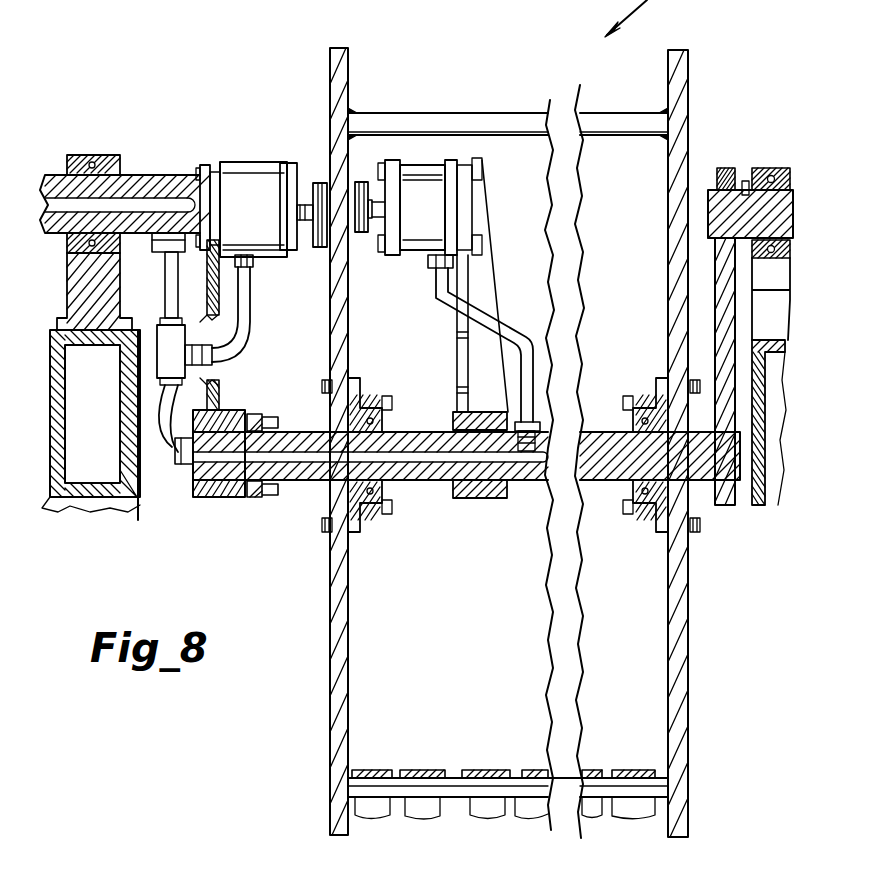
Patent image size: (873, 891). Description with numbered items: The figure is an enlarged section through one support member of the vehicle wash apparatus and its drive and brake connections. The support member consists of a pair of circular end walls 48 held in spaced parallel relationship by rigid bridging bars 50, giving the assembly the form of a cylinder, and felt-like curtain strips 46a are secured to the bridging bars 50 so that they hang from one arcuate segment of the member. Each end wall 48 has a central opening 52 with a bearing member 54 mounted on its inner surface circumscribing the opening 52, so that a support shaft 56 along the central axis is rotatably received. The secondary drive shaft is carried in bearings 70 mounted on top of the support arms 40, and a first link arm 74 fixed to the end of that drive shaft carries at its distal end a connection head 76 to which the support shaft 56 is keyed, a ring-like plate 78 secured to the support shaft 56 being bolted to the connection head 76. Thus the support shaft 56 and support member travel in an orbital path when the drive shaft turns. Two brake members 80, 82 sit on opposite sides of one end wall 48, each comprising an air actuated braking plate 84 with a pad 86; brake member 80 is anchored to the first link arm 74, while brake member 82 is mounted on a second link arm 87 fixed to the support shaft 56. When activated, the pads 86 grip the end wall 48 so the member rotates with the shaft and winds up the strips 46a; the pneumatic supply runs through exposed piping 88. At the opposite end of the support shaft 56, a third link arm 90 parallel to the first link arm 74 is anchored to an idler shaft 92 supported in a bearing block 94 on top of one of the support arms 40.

The support arm 40 is at (60, 505).
The curtain strip 46a is at (368, 800).
The end wall 48 is at (335, 68).
The bridging bar 50 is at (627, 128).
The central opening 52 is at (303, 430).
The bearing member 54 is at (383, 507).
The support shaft 56 is at (532, 505).
The bearing 70 is at (105, 152).
The first link arm 74 is at (215, 280).
The connection head 76 is at (210, 498).
The ring-like plate 78 is at (263, 507).
The brake member 80 is at (250, 160).
The brake member 82 is at (425, 195).
The braking plate 84 is at (316, 178).
The pad 86 is at (318, 183).
The second link arm 87 is at (463, 272).
The exposed piping 88 is at (122, 505).
The third link arm 90 is at (717, 325).
The idler shaft 92 is at (708, 190).
The bearing block 94 is at (763, 168).